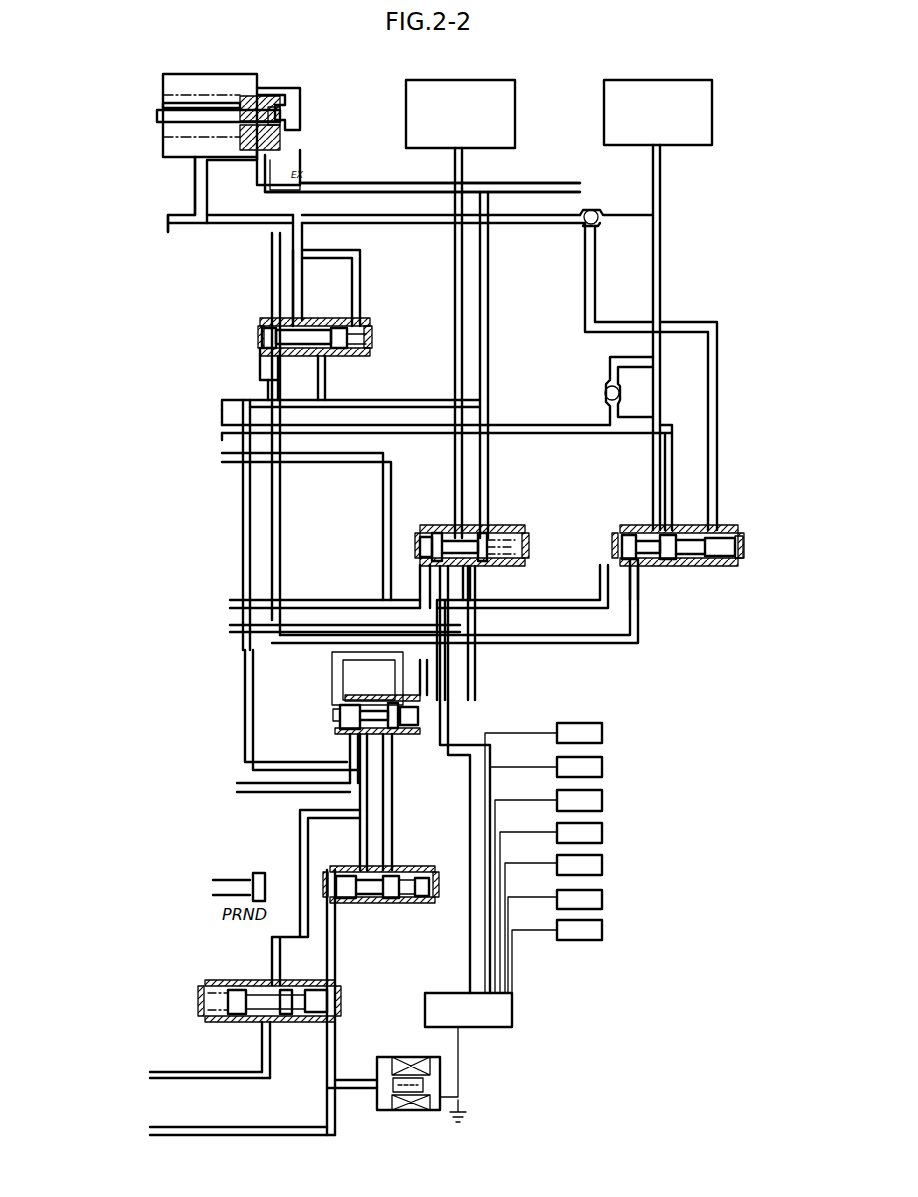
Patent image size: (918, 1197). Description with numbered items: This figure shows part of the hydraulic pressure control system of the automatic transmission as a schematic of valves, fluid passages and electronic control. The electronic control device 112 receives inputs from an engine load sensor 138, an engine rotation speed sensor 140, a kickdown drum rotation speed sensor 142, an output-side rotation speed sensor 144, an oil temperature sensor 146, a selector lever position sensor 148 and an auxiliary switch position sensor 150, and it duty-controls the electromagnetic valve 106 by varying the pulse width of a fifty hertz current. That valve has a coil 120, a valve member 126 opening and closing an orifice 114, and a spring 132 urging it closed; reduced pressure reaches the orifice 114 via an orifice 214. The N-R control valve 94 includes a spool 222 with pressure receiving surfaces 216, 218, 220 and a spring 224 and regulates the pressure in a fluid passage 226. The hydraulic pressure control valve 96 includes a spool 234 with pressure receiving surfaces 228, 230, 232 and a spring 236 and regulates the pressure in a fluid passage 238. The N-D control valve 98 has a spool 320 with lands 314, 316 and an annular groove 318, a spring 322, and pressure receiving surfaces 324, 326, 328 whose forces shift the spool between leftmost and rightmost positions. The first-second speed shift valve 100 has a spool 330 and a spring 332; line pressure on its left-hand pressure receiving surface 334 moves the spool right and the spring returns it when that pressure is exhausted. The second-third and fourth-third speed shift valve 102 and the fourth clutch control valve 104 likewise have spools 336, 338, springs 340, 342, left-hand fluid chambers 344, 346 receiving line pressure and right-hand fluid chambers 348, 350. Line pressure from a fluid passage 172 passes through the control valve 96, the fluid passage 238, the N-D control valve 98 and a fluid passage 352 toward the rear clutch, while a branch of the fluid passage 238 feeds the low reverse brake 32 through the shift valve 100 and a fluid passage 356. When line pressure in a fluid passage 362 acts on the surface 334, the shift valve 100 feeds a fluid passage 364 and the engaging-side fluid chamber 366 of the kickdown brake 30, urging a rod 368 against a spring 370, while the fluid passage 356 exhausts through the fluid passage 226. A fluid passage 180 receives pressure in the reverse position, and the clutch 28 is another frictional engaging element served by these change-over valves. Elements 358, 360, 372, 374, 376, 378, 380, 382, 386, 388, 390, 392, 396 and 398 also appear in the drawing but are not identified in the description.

The clutch 28 is at (604, 104).
The kickdown brake 30 is at (266, 82).
The low reverse brake 32 is at (406, 118).
The N-R control valve 94 is at (198, 1004).
The hydraulic pressure control valve 96 is at (430, 875).
The N-D control valve 98 is at (437, 692).
The 1st-2nd speed shift valve 100 is at (528, 520).
The 2nd-3rd speed and 4th-3rd speed shift valve 102 is at (384, 317).
The 4th clutch control valve 104 is at (736, 521).
The electromagnetic valve 106 is at (412, 1116).
The electronic control device 112 is at (491, 880).
The orifice 114 is at (372, 1090).
The coil 120 is at (432, 1112).
The valve member 126 is at (393, 1058).
The spring 132 is at (428, 1065).
The engine load sensor 138 is at (602, 733).
The rotation speed sensor 140 is at (602, 767).
The rotation speed sensor 142 is at (602, 800).
The rotation speed sensor 144 is at (602, 833).
The oil temperature sensor 146 is at (602, 930).
The position sensor 148 is at (602, 865).
The position sensor 150 is at (602, 899).
The fluid passage 172 is at (392, 796).
The fluid passage 180 is at (240, 1080).
The orifice 214 is at (326, 1110).
The pressure receiving surface 216 is at (340, 1000).
The pressure receiving surface 218 is at (298, 1024).
The pressure receiving surface 220 is at (264, 1024).
The spool 222 is at (238, 990).
The spring 224 is at (225, 1024).
The fluid passage 226 is at (455, 730).
The pressure receiving surface 228 is at (330, 868).
The pressure receiving surface 230 is at (365, 905).
The pressure receiving surface 232 is at (385, 905).
The spool 234 is at (400, 870).
The spring 236 is at (435, 905).
The fluid passage 238 is at (490, 625).
The land 314 is at (345, 710).
The land 316 is at (400, 700).
The annular groove 318 is at (395, 695).
The spool 320 is at (333, 714).
The spring 322 is at (425, 712).
The pressure receiving surface 324 is at (338, 730).
The pressure receiving surface 326 is at (370, 735).
The pressure receiving surface 328 is at (380, 732).
The spool 330 is at (434, 535).
The spring 332 is at (520, 552).
The pressure receiving surface 334 is at (420, 535).
The spool 336 is at (322, 330).
The spool 338 is at (660, 562).
The spring 340 is at (355, 358).
The spring 342 is at (700, 562).
The fluid chamber 344 is at (260, 332).
The fluid chamber 346 is at (612, 535).
The fluid chamber 348 is at (370, 335).
The fluid chamber 350 is at (722, 548).
The fluid passage 352 is at (382, 560).
The fluid passage 356 is at (455, 162).
The spring 358 is at (343, 680).
The passage 360 is at (340, 640).
The fluid passage 362 is at (368, 610).
The fluid passage 364 is at (352, 183).
The engaging-side fluid chamber 366 is at (270, 188).
The rod 368 is at (162, 125).
The spring 370 is at (180, 105).
The passage 372 is at (283, 490).
The passage 374 is at (312, 385).
The passage 376 is at (430, 222).
The check valve 378 is at (586, 210).
The passage 380 is at (584, 300).
The passage 382 is at (180, 160).
The passage 386 is at (661, 287).
The passage 388 is at (537, 422).
The check valve 390 is at (604, 388).
The passage 392 is at (368, 262).
The port 396 is at (260, 350).
The port 398 is at (260, 374).